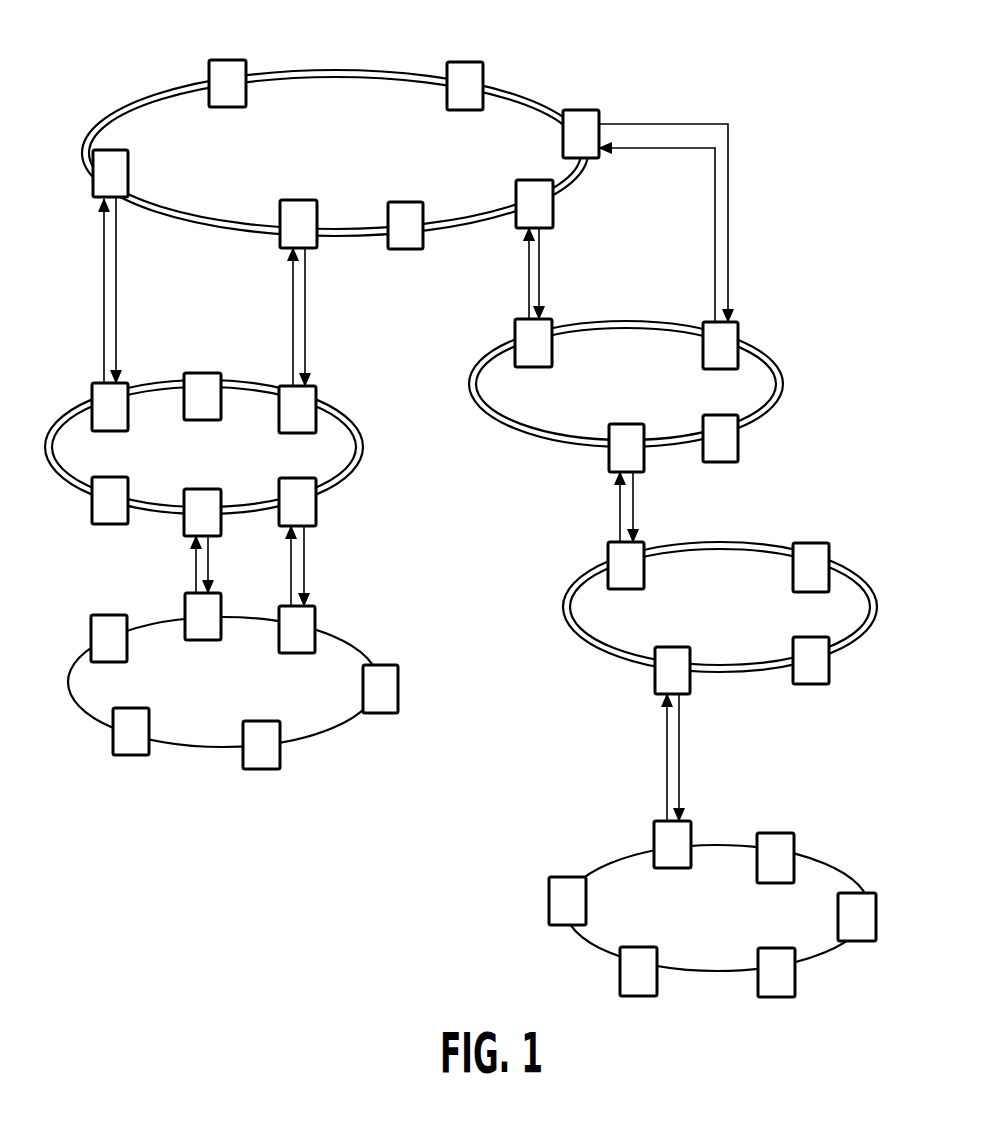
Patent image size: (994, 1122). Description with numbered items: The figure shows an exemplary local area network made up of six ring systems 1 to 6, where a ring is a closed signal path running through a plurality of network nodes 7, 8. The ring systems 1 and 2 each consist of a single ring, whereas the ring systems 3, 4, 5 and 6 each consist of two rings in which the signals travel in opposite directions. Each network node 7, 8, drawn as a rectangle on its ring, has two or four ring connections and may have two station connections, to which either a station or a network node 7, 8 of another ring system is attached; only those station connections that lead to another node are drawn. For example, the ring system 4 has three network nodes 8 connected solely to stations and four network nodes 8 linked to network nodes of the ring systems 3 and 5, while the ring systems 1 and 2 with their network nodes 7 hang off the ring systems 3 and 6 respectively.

The ring system 1 is at (92, 683).
The ring system 2 is at (632, 866).
The ring system 3 is at (80, 440).
The ring system 4 is at (415, 108).
The ring system 5 is at (574, 422).
The ring system 6 is at (608, 612).
The network node 7 is at (504, 774).
The network node 8 is at (482, 361).